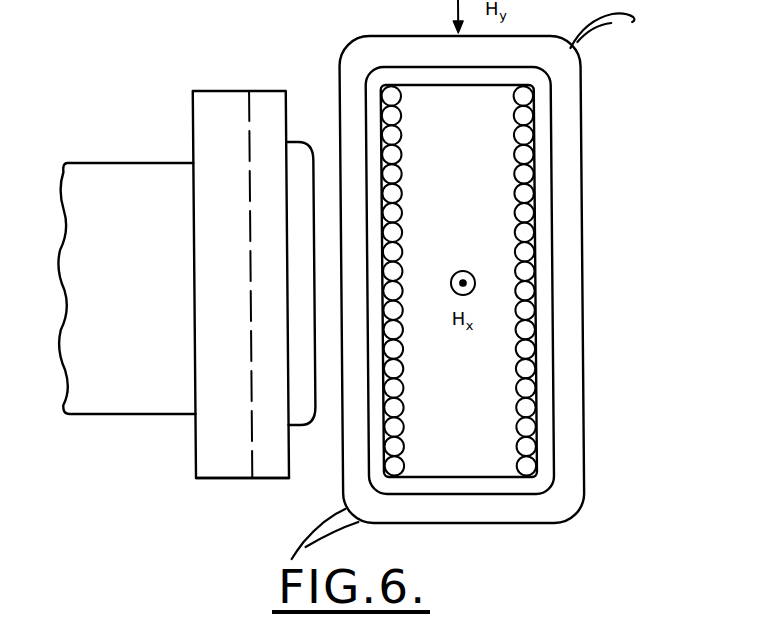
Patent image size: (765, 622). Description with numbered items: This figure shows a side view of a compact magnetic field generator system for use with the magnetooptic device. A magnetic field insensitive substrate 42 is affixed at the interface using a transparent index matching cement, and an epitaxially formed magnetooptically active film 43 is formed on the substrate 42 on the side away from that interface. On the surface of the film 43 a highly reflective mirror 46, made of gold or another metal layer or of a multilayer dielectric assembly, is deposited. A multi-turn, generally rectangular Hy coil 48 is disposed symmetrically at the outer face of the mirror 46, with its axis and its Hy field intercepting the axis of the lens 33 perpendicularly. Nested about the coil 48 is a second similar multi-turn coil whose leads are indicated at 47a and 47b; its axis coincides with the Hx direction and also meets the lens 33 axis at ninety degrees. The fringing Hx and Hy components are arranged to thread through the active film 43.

The lens 33 is at (117, 172).
The magnetic field insensitive substrate 42 is at (231, 91).
The magnetooptically active film 43 is at (272, 478).
The highly reflective mirror 46 is at (298, 260).
The lead of second coil 47a is at (329, 530).
The lead of second coil 47b is at (598, 25).
The Hy coil 48 is at (402, 428).